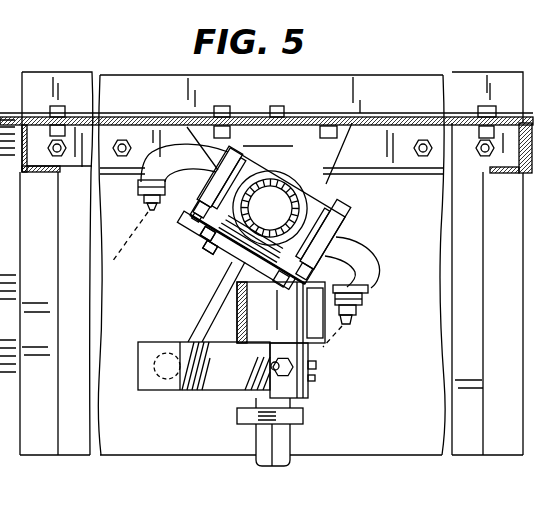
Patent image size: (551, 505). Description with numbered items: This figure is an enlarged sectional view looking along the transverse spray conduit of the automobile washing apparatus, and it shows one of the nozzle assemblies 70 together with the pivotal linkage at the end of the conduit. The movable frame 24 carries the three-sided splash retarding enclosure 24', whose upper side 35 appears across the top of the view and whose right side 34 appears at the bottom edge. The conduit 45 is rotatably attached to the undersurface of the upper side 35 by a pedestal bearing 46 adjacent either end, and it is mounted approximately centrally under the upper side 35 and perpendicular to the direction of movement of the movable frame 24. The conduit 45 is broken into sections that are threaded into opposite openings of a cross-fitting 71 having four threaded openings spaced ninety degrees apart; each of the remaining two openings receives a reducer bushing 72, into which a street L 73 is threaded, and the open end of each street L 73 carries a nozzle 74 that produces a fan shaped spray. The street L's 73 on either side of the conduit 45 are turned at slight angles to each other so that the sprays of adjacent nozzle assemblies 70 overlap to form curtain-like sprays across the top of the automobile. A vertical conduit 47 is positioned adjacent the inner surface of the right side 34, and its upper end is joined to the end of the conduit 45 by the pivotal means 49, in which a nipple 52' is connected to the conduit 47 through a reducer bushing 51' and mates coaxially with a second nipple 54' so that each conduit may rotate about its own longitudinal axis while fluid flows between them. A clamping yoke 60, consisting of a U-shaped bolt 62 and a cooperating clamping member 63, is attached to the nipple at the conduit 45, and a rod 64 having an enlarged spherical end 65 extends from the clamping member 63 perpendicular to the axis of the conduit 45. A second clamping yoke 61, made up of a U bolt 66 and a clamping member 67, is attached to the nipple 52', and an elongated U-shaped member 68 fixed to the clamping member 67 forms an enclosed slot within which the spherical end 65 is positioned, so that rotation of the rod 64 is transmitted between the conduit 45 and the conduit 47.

The movable frame 24 is at (277, 106).
The splash retarding enclosure 24' is at (261, 290).
The right side 34 is at (370, 453).
The upper side 35 is at (353, 128).
The conduit 45 is at (293, 193).
The pedestal bearing 46 is at (298, 142).
The conduit 47 is at (257, 440).
The pivotal means 49 is at (183, 411).
The reducer bushing 51' is at (302, 425).
The nipple 52' is at (324, 377).
The nipple 54' is at (314, 340).
The clamping yoke 60 is at (222, 253).
The clamping yoke 61 is at (322, 379).
The U-shaped bolt 62 is at (200, 252).
The clamping member 63 is at (200, 227).
The rod 64 is at (208, 310).
The enlarged spherical end 65 is at (170, 345).
The U bolt 66 is at (313, 366).
The clamping member 67 is at (290, 375).
The U-shaped member 68 is at (152, 385).
The nozzle assembly 70 is at (368, 222).
The cross-fitting 71 is at (333, 203).
The reducer bushing 72 is at (232, 147).
The street L 73 is at (172, 147).
The nozzle 74 is at (137, 197).